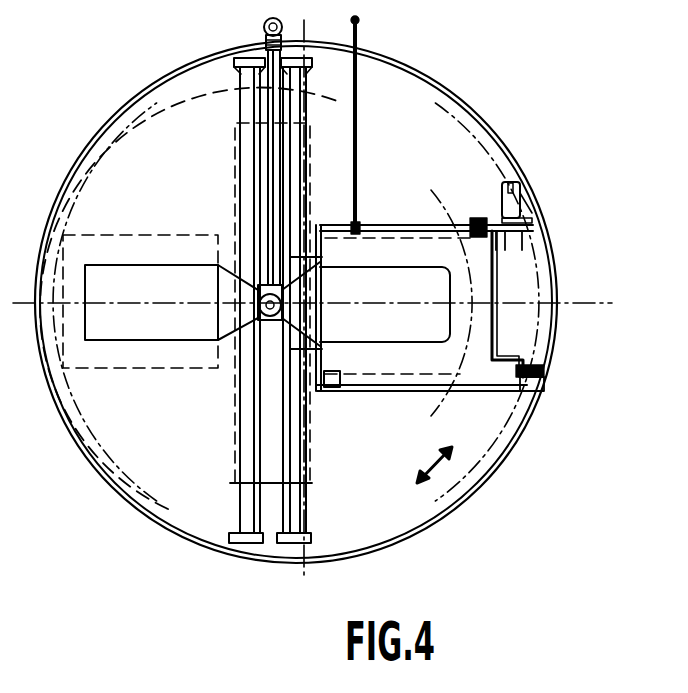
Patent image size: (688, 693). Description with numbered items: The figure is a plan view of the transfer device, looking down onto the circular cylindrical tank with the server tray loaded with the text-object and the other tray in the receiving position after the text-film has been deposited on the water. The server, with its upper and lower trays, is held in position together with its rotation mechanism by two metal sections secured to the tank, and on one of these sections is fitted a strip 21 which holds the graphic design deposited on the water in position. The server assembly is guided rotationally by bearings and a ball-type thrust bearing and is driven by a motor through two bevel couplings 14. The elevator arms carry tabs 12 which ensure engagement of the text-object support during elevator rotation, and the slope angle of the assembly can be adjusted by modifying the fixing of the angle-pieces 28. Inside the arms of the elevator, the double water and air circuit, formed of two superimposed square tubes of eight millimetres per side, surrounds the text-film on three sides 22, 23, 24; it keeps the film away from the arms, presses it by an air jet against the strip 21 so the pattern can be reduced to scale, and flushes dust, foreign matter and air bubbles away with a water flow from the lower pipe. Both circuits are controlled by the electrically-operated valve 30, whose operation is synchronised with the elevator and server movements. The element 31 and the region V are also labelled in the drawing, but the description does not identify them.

The tab 12 is at (360, 230).
The bevel coupling 14 is at (216, 302).
The strip 21 is at (320, 276).
The side of the double water and air circuit 22 is at (422, 228).
The side of the double water and air circuit 23 is at (497, 325).
The side of the double water and air circuit 24 is at (432, 395).
The angle-piece 28 is at (528, 214).
The electrically-operated valve 30 is at (360, 23).
The lower bracket 31 is at (540, 372).
The vacuum region V is at (234, 166).